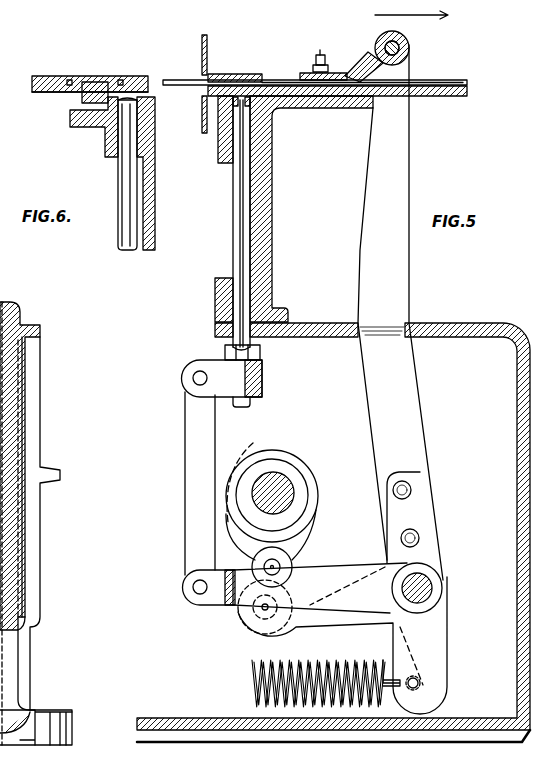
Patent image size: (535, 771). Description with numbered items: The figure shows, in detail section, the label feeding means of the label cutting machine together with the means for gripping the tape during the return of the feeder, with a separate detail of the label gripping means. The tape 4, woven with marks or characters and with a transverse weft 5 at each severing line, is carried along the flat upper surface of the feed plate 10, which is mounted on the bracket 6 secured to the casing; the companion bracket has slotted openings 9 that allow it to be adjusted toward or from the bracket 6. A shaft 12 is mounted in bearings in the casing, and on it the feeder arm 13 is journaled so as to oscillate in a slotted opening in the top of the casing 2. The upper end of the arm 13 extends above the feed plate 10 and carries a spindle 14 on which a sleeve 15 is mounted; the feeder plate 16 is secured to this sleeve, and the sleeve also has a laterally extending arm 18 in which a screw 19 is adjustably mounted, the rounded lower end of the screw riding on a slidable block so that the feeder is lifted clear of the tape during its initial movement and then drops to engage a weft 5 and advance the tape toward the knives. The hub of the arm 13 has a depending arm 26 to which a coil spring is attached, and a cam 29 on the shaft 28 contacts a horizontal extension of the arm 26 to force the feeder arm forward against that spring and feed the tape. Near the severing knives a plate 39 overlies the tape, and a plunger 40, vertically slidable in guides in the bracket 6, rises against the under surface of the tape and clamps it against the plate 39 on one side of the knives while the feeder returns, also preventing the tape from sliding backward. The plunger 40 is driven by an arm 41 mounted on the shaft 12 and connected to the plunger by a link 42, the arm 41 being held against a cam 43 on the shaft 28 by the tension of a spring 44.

In FIG. 5, the housing 2 is at (521, 390).
In FIG. 6, the tape 4 is at (94, 80).
In FIG. 5, the tape 4 is at (172, 81).
In FIG. 5, the weft 5 is at (201, 81).
In FIG. 6, the bracket 6 is at (106, 143).
In FIG. 5, the bracket 6 is at (271, 230).
In FIG. 5, the slotted openings 9 is at (36, 506).
In FIG. 6, the feed plate 10 is at (48, 92).
In FIG. 5, the feed plate 10 is at (430, 97).
In FIG. 5, the shaft 12 is at (432, 587).
In FIG. 5, the arm 13 is at (404, 138).
In FIG. 5, the spindle 14 is at (410, 50).
In FIG. 5, the sleeve 15 is at (397, 41).
In FIG. 5, the plate 16 is at (364, 62).
In FIG. 5, the laterally extending arm 18 is at (312, 74).
In FIG. 5, the screw 19 is at (320, 52).
In FIG. 5, the depending arm 26 is at (340, 635).
In FIG. 5, the shaft 28 is at (294, 488).
In FIG. 5, the cam 29 is at (302, 540).
In FIG. 6, the plate 39 is at (50, 76).
In FIG. 5, the plate 39 is at (227, 74).
In FIG. 6, the plunger 40 is at (125, 170).
In FIG. 5, the plunger 40 is at (237, 188).
In FIG. 5, the arm 41 is at (338, 571).
In FIG. 5, the link 42 is at (186, 508).
In FIG. 5, the cam 43 is at (246, 452).
In FIG. 5, the spring 44 is at (252, 681).